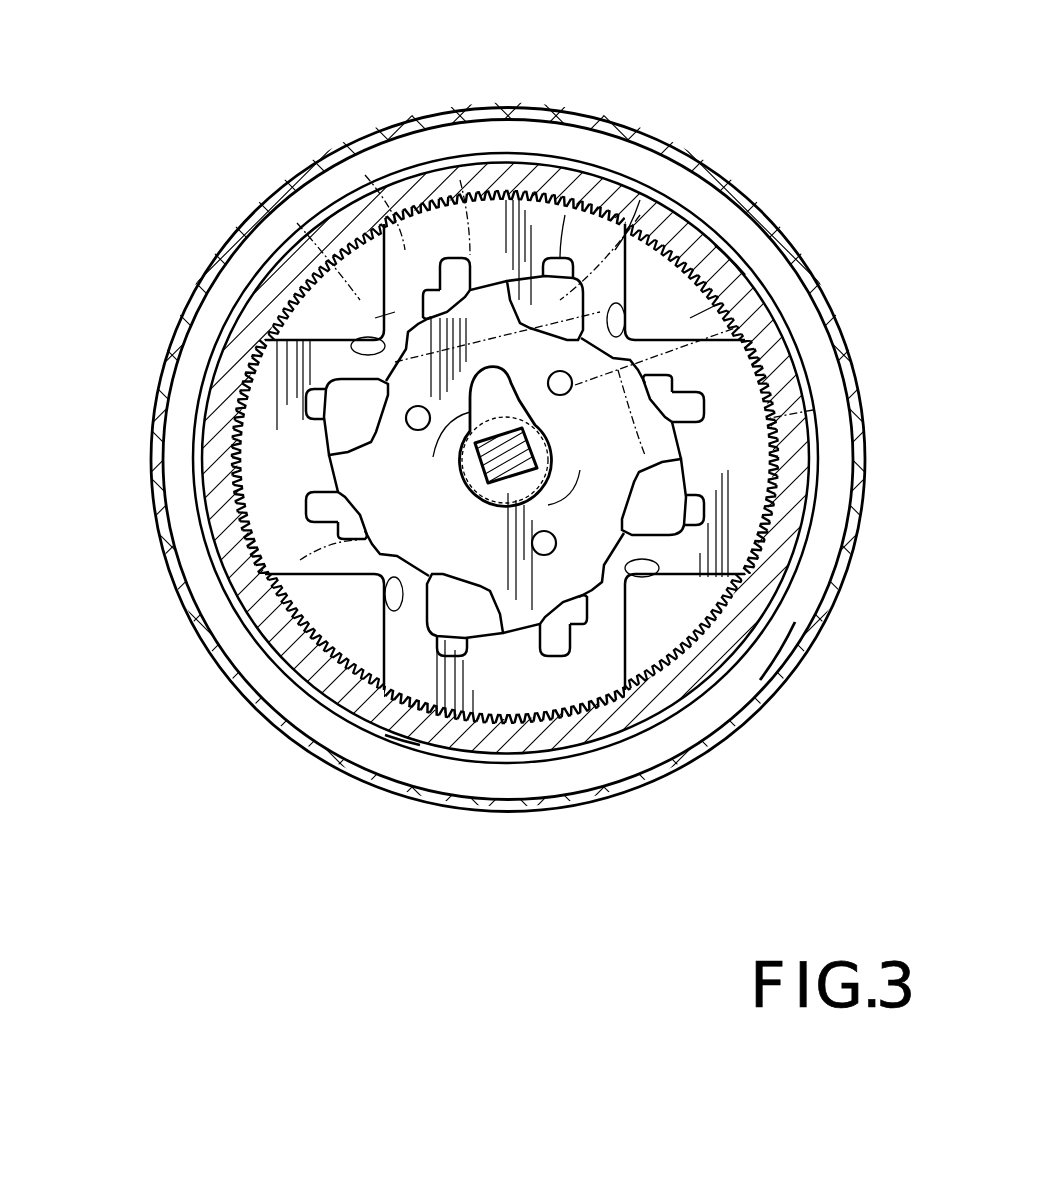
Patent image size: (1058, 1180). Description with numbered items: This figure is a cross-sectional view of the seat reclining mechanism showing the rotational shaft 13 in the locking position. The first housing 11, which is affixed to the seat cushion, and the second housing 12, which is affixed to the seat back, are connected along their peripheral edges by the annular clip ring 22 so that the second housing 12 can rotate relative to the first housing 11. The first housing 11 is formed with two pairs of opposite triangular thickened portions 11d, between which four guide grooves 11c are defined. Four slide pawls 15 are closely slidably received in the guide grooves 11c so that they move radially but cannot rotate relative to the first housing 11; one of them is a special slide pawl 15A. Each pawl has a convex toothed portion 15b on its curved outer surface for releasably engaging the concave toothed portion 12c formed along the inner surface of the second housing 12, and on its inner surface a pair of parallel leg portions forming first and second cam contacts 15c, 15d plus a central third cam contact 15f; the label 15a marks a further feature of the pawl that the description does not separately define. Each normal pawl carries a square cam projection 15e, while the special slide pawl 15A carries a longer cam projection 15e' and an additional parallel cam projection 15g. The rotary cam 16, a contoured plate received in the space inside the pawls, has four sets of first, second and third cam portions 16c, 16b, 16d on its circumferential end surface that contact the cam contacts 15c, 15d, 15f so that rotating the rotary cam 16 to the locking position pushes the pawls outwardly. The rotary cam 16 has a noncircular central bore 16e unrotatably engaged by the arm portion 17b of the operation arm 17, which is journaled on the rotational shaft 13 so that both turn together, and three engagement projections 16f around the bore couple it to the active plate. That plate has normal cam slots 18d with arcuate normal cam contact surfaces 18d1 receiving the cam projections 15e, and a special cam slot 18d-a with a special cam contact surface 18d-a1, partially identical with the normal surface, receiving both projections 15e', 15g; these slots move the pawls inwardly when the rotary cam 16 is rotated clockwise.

The first housing 11 is at (223, 283).
The guide grooves 11c is at (405, 755).
The triangular thickened portions 11d is at (717, 243).
The second housing 12 is at (273, 253).
The concave toothed portion 12c is at (800, 630).
The rotational shaft 13 is at (500, 487).
The slide pawls 15 is at (747, 437).
The special slide pawl 15A is at (640, 200).
The pawl side surface 15a is at (365, 175).
The convex toothed portion 15b is at (500, 190).
The first cam contact 15c is at (375, 318).
The second cam contact 15d is at (720, 303).
The cam projection 15e is at (235, 589).
The cam projection 15e' is at (385, 147).
The third cam contact 15f is at (565, 215).
The additional cam projection 15g is at (640, 215).
The rotary cam 16 is at (760, 522).
The second cam portions 16b is at (705, 310).
The first cam portions 16c is at (385, 315).
The third cam portions 16d is at (562, 236).
The central bore 16e is at (490, 463).
The engagement projections 16f is at (650, 345).
The operation arm 17 is at (543, 443).
The arm portion 17b is at (493, 397).
The normal cam slots 18d is at (225, 650).
The normal cam contact surface 18d1 is at (813, 410).
The special cam slot 18d-a is at (297, 223).
The special cam contact surface 18d-a1 is at (460, 180).
The clip ring 22 is at (727, 180).